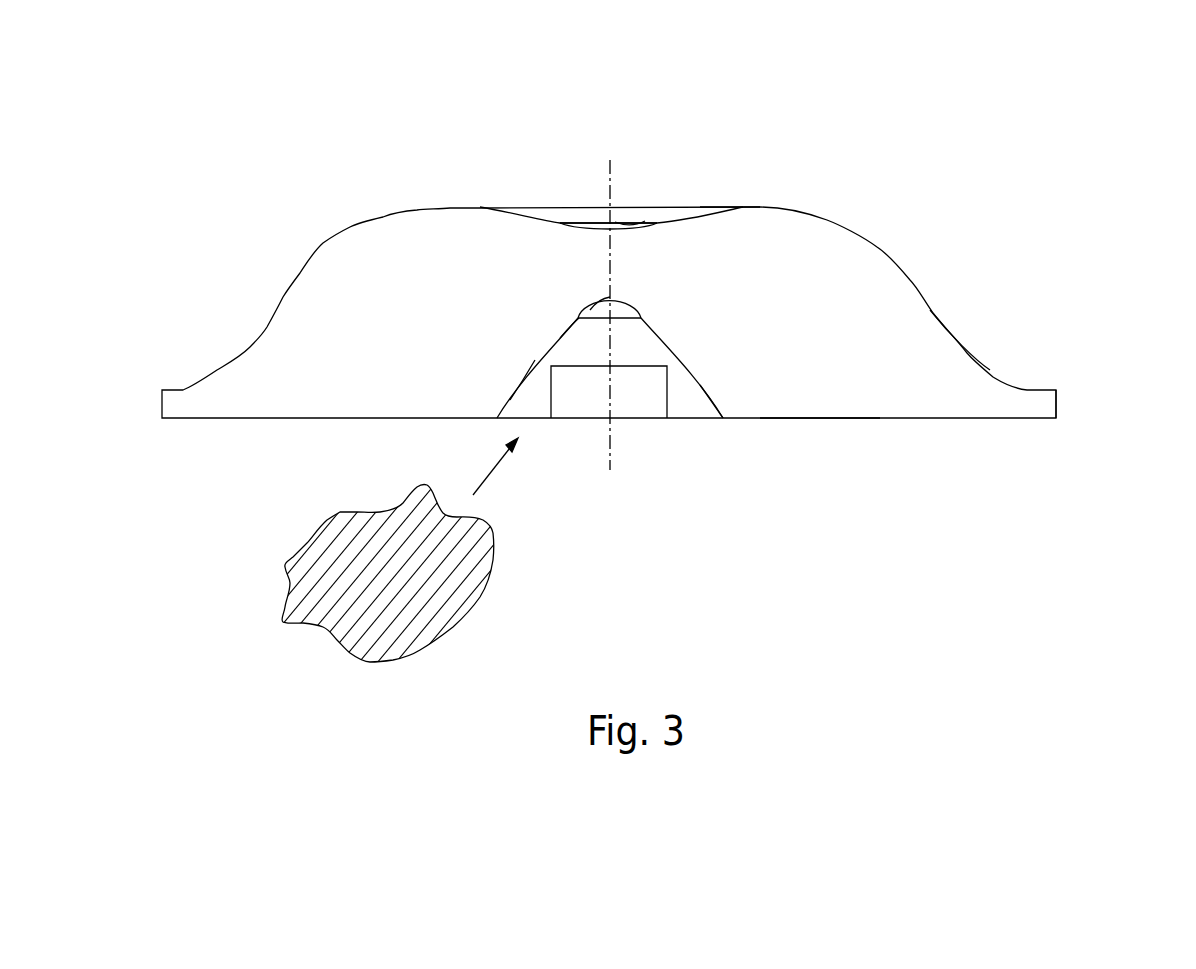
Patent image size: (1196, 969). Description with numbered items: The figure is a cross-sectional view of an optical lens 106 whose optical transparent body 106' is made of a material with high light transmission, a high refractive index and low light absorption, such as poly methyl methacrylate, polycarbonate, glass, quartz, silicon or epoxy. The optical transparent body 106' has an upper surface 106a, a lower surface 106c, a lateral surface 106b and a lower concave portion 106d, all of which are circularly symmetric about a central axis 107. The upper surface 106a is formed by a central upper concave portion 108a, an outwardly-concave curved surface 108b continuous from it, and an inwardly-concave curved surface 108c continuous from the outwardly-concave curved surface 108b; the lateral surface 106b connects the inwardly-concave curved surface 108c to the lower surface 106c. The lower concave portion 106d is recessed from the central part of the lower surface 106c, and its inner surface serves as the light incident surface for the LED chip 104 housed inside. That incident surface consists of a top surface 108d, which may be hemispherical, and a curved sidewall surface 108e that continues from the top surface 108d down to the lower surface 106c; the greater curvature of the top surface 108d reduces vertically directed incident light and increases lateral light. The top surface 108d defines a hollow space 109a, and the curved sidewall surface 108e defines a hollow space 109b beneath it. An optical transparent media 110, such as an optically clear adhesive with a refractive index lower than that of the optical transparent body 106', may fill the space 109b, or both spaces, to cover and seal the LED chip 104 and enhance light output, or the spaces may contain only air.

The LED chip 104 is at (645, 405).
The optical lens 106 is at (609, 292).
The optical transparent body 106' is at (421, 327).
The upper surface 106a is at (845, 122).
The lateral surface 106b is at (1057, 403).
The lower surface 106c is at (815, 418).
The lower concave portion 106d is at (562, 138).
The central axis 107 is at (609, 160).
The central upper concave portion 108a is at (624, 225).
The outwardly-concave curved surface 108b is at (753, 207).
The inwardly-concave curved surface 108c is at (988, 367).
The top surface 108d is at (578, 313).
The curved sidewall surface 108e is at (530, 363).
The hollow chamber or space 109a is at (604, 308).
The hollow chamber or space 109b is at (705, 405).
The optical transparent media 110 is at (410, 650).